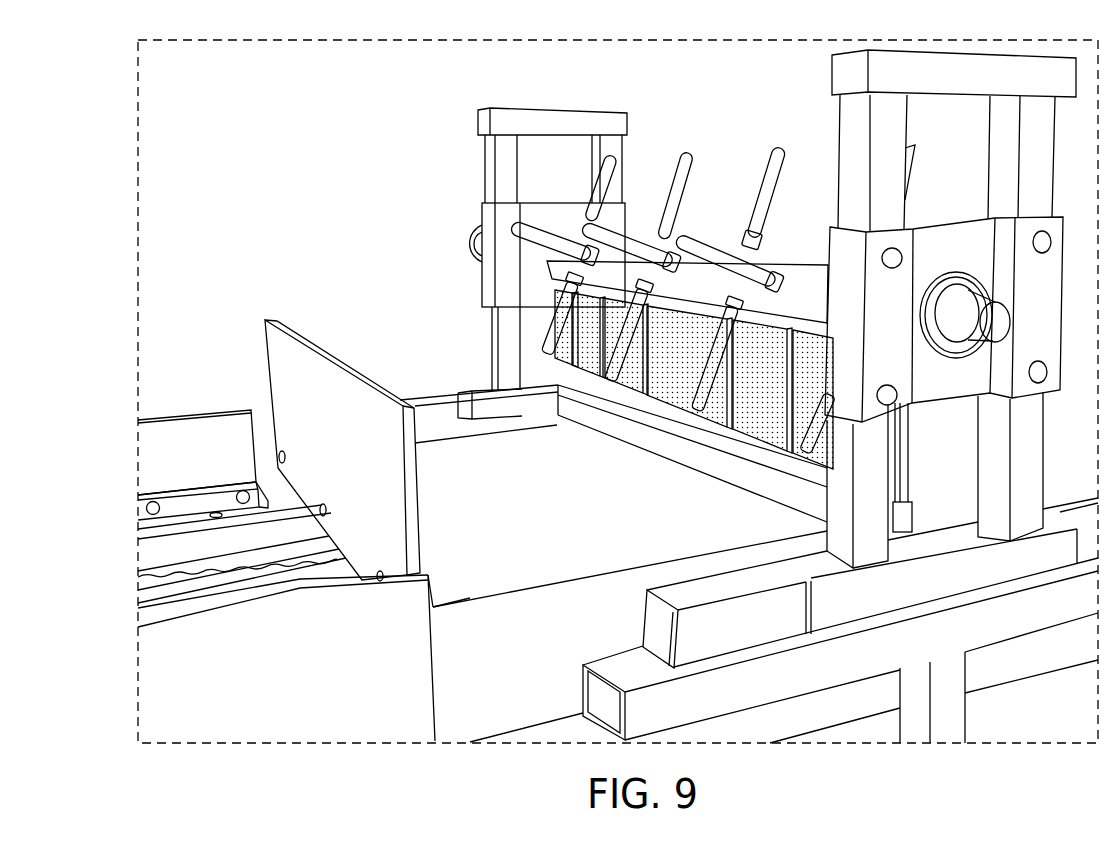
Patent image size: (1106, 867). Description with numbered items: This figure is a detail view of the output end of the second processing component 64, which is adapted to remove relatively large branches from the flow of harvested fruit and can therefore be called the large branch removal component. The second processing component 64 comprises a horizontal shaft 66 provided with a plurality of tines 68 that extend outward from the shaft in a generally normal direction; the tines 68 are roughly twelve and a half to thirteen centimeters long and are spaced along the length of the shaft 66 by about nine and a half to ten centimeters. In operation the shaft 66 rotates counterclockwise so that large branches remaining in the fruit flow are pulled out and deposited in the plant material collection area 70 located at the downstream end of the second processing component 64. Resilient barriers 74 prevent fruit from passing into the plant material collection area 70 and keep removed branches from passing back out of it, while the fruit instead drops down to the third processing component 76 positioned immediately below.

The second processing component 64 is at (404, 220).
The horizontal shaft 66 is at (802, 283).
The tines 68 is at (681, 163).
The plant material collection area 70 is at (473, 467).
The resilient barriers 74 is at (587, 353).
The third processing component 76 is at (194, 412).